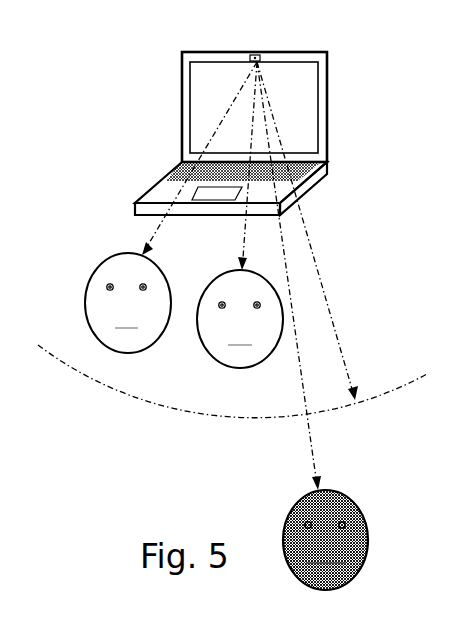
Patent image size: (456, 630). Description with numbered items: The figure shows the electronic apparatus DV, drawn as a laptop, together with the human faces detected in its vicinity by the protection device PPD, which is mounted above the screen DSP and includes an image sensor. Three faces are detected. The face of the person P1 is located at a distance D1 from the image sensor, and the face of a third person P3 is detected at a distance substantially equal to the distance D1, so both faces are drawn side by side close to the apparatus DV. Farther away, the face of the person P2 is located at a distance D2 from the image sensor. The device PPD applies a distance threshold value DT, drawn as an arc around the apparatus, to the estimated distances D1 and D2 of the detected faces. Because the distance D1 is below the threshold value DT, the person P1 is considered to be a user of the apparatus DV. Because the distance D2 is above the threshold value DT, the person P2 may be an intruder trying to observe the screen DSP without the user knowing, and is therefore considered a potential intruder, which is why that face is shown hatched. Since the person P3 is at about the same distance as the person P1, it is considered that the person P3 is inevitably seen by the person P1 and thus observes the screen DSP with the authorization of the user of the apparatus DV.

The apparatus DV is at (154, 150).
The screen DSP is at (305, 72).
The device PPD is at (251, 57).
The distance D1 is at (241, 266).
The distance threshold value DT is at (350, 376).
The distance D2 is at (312, 443).
The person P1 is at (86, 300).
The third person P3 is at (208, 353).
The person P2 is at (366, 521).